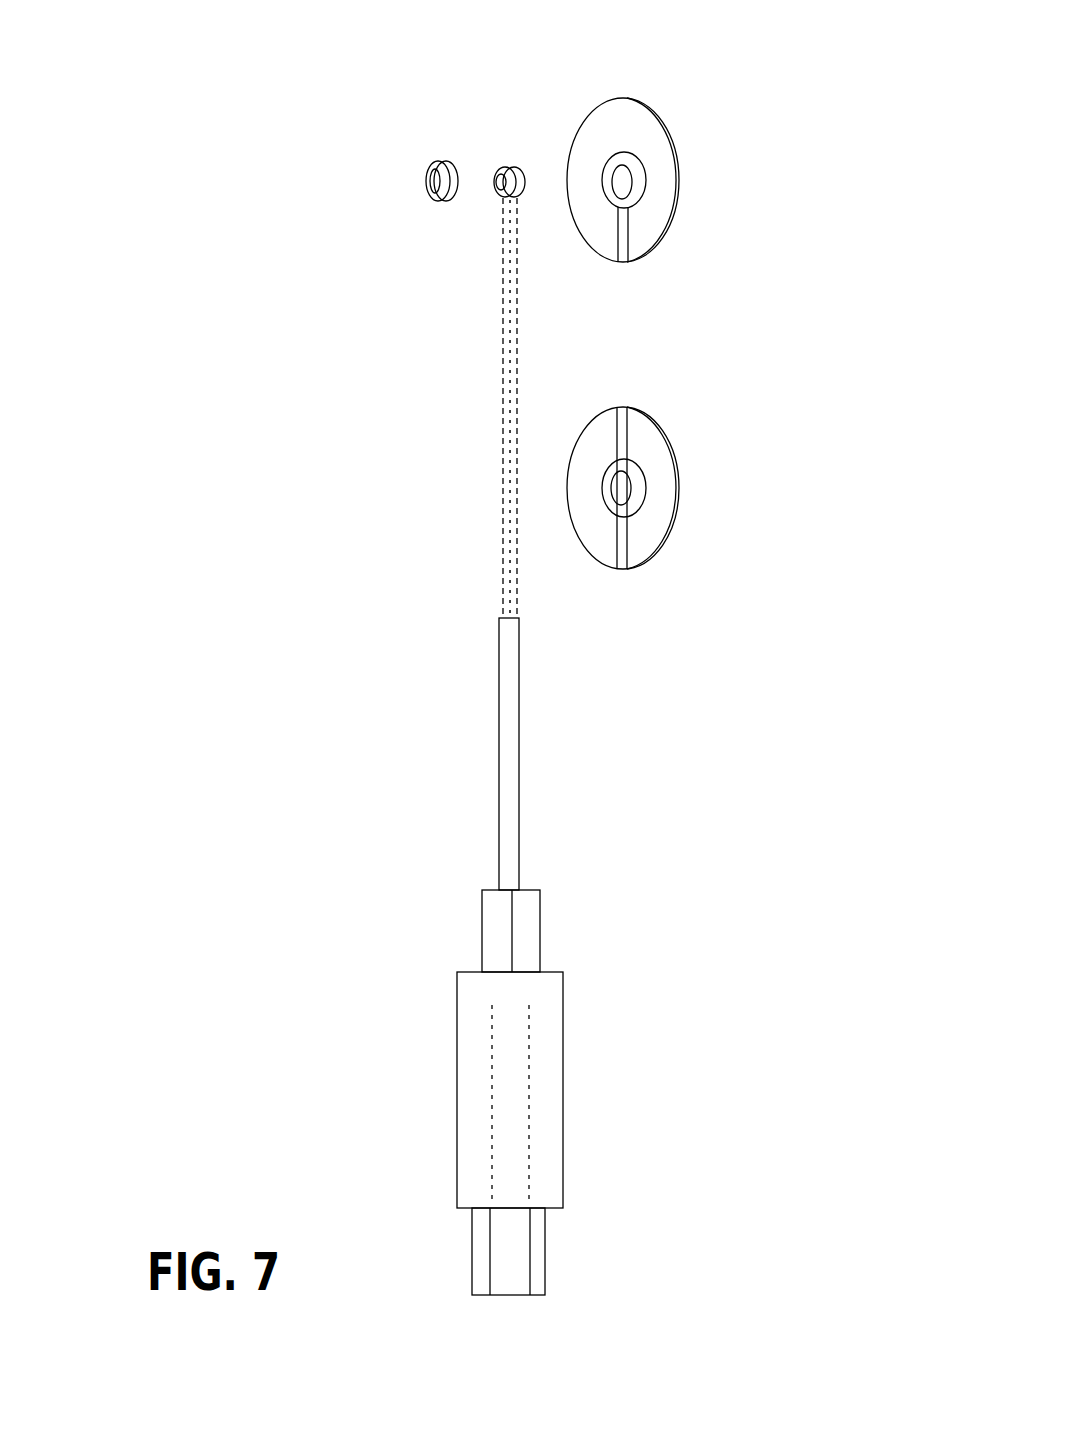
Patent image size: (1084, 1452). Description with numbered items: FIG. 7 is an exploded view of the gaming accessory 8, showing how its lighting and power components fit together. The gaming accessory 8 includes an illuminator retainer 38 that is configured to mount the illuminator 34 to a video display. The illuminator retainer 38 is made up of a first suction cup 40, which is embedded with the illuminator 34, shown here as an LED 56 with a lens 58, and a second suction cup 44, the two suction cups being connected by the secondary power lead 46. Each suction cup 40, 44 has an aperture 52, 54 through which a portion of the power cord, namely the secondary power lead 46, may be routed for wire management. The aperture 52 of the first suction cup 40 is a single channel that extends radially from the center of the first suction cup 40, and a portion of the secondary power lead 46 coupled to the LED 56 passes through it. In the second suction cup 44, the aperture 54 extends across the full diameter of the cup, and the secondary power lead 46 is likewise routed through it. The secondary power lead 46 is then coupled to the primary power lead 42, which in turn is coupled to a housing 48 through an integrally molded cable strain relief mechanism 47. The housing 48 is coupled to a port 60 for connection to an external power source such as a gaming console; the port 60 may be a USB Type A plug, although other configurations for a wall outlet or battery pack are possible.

The gaming accessory 8 is at (205, 42).
The illuminator 34 is at (372, 132).
The illuminator retainer 38 is at (717, 373).
The first suction cup 40 is at (652, 140).
The primary power lead 42 is at (503, 773).
The second suction cup 44 is at (665, 490).
The secondary power lead 46 is at (510, 437).
The cable strain relief mechanism 47 is at (528, 935).
The housing 48 is at (470, 1088).
The aperture of first suction cup 52 is at (623, 245).
The aperture of second suction cup 54 is at (622, 555).
The LED 56 is at (505, 166).
The lens 58 is at (435, 208).
The port 60 is at (512, 1258).